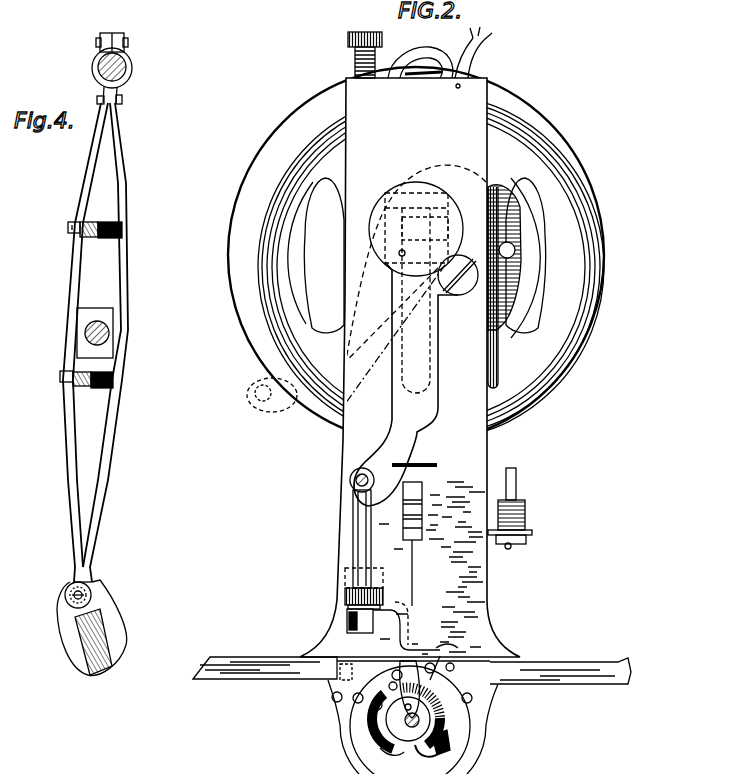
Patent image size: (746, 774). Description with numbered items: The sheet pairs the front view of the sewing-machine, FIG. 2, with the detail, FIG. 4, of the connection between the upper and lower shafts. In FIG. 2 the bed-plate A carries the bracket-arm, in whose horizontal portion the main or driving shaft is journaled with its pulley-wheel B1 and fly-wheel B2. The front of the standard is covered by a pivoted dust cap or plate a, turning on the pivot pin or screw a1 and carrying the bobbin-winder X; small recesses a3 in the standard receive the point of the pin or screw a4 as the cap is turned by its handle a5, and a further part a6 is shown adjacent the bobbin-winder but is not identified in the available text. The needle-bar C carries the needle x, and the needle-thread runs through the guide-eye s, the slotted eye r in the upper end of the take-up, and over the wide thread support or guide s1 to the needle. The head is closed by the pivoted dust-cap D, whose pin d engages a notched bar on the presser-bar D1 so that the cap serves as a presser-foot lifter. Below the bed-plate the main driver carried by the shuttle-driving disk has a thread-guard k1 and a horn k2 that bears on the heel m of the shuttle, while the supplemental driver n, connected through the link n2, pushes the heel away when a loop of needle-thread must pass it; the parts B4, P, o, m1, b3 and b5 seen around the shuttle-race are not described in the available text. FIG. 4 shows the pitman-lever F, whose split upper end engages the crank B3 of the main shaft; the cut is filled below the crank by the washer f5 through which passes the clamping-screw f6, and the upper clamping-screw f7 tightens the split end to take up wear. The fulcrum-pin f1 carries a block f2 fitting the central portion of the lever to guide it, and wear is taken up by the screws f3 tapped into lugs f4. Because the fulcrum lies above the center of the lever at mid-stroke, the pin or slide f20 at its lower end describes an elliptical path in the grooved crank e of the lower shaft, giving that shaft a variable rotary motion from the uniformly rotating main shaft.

In FIG. 4, the upper clamping-screw f7 is at (125, 42).
In FIG. 4, the crank B3 is at (100, 98).
In FIG. 4, the clamping-screw f6 is at (121, 99).
In FIG. 4, the washer f5 is at (110, 106).
In FIG. 4, the pitman-lever F is at (82, 342).
In FIG. 4, the lugs f4 is at (104, 223).
In FIG. 4, the screws f3 is at (84, 400).
In FIG. 4, the block f2 is at (107, 350).
In FIG. 4, the fulcrum-pin f1 is at (106, 332).
In FIG. 4, the pin or slide f20 is at (92, 610).
In FIG. 4, the grooved crank e is at (115, 626).
In FIG. 2, the fly-wheel B2 is at (585, 300).
In FIG. 2, the pulley-wheel B1 is at (512, 278).
In FIG. 2, the handle a5 is at (516, 250).
In FIG. 2, the pivoted dust-cap D is at (417, 200).
In FIG. 2, the pivot pin or screw a1 is at (420, 230).
In FIG. 2, the pivoted dust cap or plate a is at (408, 247).
In FIG. 2, the recesses or indentations a3 is at (468, 285).
In FIG. 2, the presser bar D1 is at (356, 546).
In FIG. 2, the pin or screw a4 is at (358, 620).
In FIG. 2, the needle-bar C is at (423, 532).
In FIG. 2, the needle x is at (422, 573).
In FIG. 2, the slotted eye r is at (372, 55).
In FIG. 2, the supplemental driver n is at (420, 52).
In FIG. 2, the guide-eye s is at (478, 68).
In FIG. 2, the wide thread support or guide s1 is at (492, 44).
In FIG. 2, the bobbin-winder X is at (517, 506).
In FIG. 2, the screw a6 is at (506, 548).
In FIG. 2, the bed-plate A is at (570, 663).
In FIG. 2, the shuttle race casting B4 is at (413, 718).
In FIG. 2, the shuttle hub P is at (406, 718).
In FIG. 2, the thread-guard k1 is at (378, 730).
In FIG. 2, the horn k2 is at (390, 683).
In FIG. 2, the heel m is at (398, 685).
In FIG. 2, the eye o is at (406, 702).
In FIG. 2, the link n2 is at (452, 733).
In FIG. 2, the driver arm m1 is at (436, 757).
In FIG. 2, the screw b3 is at (456, 667).
In FIG. 2, the feed dog b5 is at (437, 660).
In FIG. 2, the pin d is at (453, 637).